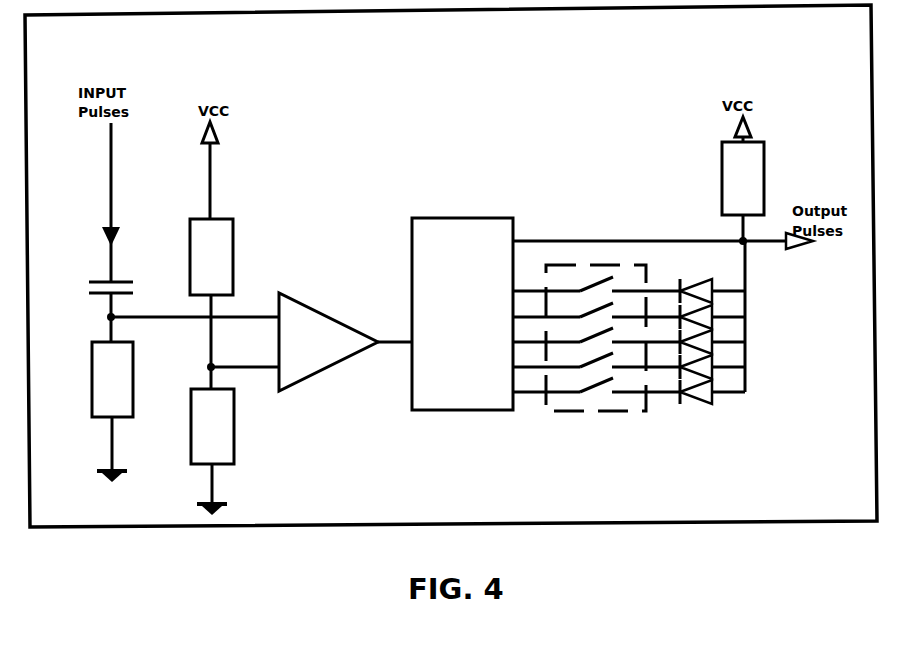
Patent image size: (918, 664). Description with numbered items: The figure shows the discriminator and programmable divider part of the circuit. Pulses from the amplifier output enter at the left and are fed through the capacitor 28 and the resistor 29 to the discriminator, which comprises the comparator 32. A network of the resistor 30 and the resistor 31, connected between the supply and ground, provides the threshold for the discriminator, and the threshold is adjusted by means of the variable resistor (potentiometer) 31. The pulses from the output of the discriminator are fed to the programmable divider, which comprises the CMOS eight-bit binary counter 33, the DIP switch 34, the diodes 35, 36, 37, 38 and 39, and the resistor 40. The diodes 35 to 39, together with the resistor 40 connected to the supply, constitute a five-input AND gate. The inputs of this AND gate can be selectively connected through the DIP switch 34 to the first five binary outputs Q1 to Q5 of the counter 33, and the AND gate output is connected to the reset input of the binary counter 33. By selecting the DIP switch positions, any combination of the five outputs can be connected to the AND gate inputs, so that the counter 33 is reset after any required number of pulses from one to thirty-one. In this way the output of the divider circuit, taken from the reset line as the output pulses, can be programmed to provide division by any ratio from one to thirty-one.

The capacitor 28 is at (92, 297).
The resistor 29 is at (92, 399).
The resistor 30 is at (227, 293).
The variable resistor 31 is at (229, 441).
The comparator 32 is at (345, 342).
The binary counter 33 is at (462, 300).
The DIP switch 34 is at (596, 360).
The diode 35 is at (730, 291).
The diode 36 is at (731, 317).
The diode 37 is at (730, 341).
The diode 38 is at (730, 365).
The diode 39 is at (730, 390).
The resistor 40 is at (728, 189).